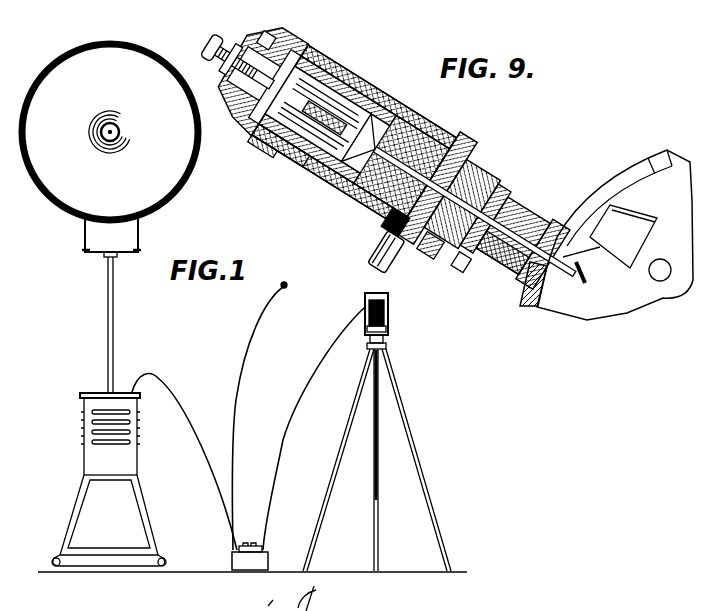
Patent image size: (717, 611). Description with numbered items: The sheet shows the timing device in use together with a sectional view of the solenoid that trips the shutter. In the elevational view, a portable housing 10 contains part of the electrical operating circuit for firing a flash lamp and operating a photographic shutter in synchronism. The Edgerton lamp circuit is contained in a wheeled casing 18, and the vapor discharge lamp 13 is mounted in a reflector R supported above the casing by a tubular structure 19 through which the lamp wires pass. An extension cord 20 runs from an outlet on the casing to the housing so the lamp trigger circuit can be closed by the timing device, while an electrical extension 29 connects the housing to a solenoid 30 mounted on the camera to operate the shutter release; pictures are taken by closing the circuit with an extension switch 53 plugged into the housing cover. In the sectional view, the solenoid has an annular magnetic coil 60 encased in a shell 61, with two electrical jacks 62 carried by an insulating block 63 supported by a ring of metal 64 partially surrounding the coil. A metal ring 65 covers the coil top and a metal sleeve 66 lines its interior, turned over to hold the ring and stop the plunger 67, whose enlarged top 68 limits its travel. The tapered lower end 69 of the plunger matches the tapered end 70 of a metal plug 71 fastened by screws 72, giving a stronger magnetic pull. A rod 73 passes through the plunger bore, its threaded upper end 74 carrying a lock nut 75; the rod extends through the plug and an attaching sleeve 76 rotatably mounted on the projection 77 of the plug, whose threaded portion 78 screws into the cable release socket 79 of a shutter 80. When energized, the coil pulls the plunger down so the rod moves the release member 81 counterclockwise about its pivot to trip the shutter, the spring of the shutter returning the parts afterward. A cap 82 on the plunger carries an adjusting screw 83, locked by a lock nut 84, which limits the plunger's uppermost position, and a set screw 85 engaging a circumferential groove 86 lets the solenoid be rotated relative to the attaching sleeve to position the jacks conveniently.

In FIG. 1, the reflector R is at (181, 60).
In FIG. 1, the vapor discharge lamp 13 is at (124, 130).
In FIG. 1, the tubular structure 19 is at (108, 332).
In FIG. 1, the casing 18 is at (90, 450).
In FIG. 1, the extension cord 20 is at (178, 391).
In FIG. 1, the extension switch 53 is at (253, 320).
In FIG. 1, the electrical extension 29 is at (291, 431).
In FIG. 1, the solenoid 30 is at (366, 302).
In FIG. 1, the portable housing 10 is at (232, 557).
In FIG. 9, the annular magnetic coil 60 is at (392, 110).
In FIG. 9, the shell 61 is at (383, 95).
In FIG. 9, the electrical jacks 62 is at (382, 256).
In FIG. 9, the insulating block 63 is at (390, 228).
In FIG. 9, the ring of metal 64 is at (455, 150).
In FIG. 9, the metal ring 65 is at (272, 160).
In FIG. 9, the metal sleeve 66 is at (352, 73).
In FIG. 9, the plunger 67 is at (300, 173).
In FIG. 9, the enlarged top 68 is at (300, 65).
In FIG. 9, the lower end of the plunger 69 is at (416, 125).
In FIG. 9, the tapered end 70 is at (340, 188).
In FIG. 9, the metal plug 71 is at (358, 206).
In FIG. 9, the screws 72 is at (428, 252).
In FIG. 9, the rod 73 is at (510, 256).
In FIG. 9, the upper end of the rod 74 is at (241, 133).
In FIG. 9, the lock nut 75 is at (293, 58).
In FIG. 9, the attaching sleeve 76 is at (520, 210).
In FIG. 9, the projection 77 is at (480, 170).
In FIG. 9, the threaded portion 78 is at (548, 228).
In FIG. 9, the cable release socket 79 is at (572, 280).
In FIG. 9, the shutter 80 is at (525, 308).
In FIG. 9, the release member 81 is at (615, 235).
In FIG. 9, the cap 82 is at (262, 40).
In FIG. 9, the adjusting screw 83 is at (214, 50).
In FIG. 9, the lock nut 84 is at (224, 70).
In FIG. 9, the set screw 85 is at (462, 262).
In FIG. 9, the circumferential groove 86 is at (500, 185).